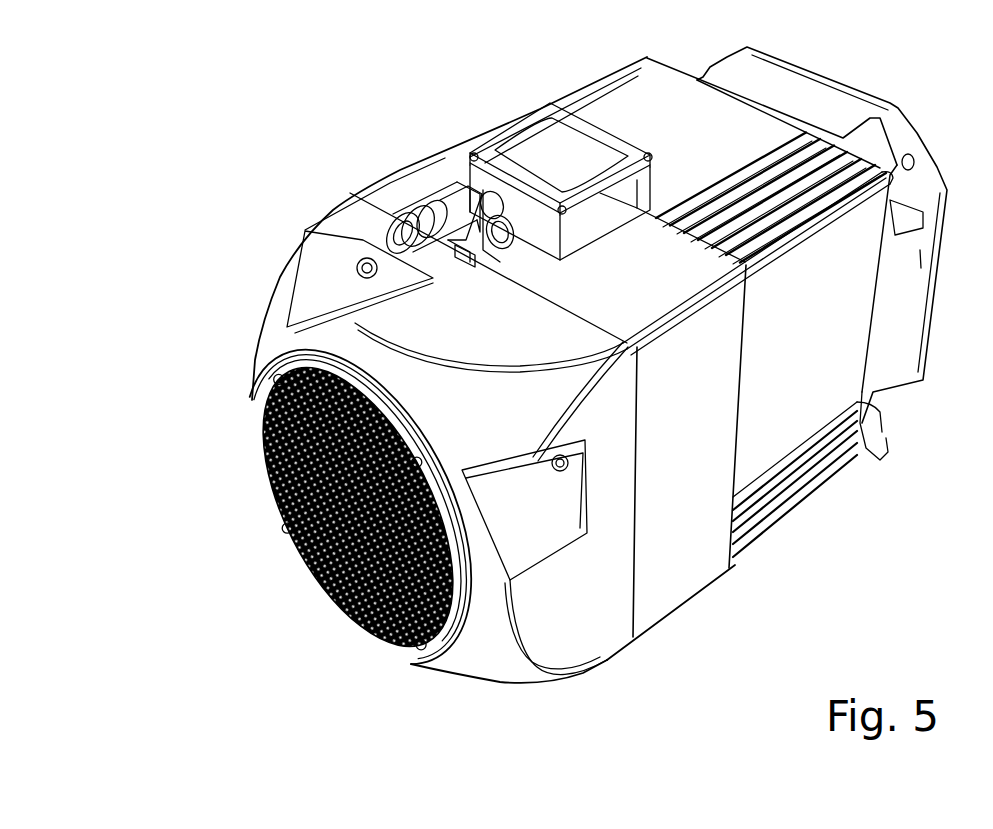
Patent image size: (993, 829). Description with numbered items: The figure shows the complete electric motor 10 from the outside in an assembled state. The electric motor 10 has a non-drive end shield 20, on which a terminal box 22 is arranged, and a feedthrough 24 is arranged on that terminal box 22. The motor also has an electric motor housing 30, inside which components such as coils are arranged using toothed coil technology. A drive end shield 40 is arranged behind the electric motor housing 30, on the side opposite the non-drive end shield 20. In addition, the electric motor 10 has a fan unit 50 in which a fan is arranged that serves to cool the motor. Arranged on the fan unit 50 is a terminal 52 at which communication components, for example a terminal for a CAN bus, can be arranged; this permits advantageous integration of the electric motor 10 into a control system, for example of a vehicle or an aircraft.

The electric motor 10 is at (503, 373).
The non-drive end shield 20 is at (672, 550).
The terminal box 22 is at (528, 137).
The feedthrough 24 is at (490, 172).
The electric motor housing 30 is at (775, 450).
The drive end shield 40 is at (887, 353).
The fan unit 50 is at (563, 612).
The terminal 52 is at (410, 222).